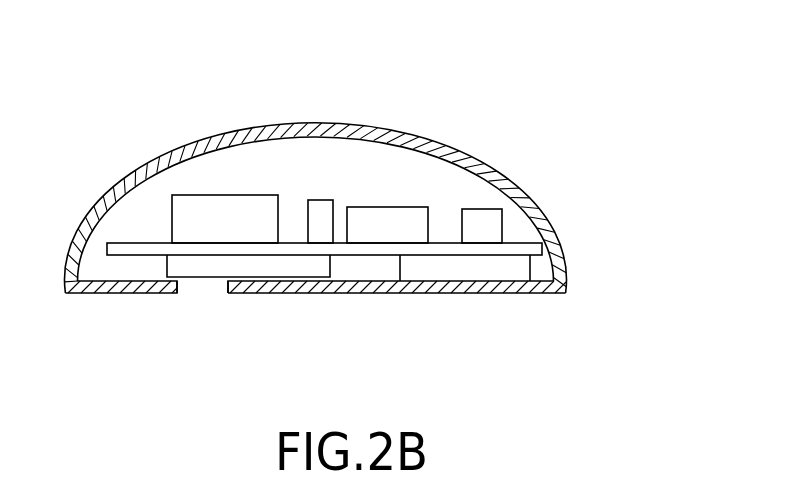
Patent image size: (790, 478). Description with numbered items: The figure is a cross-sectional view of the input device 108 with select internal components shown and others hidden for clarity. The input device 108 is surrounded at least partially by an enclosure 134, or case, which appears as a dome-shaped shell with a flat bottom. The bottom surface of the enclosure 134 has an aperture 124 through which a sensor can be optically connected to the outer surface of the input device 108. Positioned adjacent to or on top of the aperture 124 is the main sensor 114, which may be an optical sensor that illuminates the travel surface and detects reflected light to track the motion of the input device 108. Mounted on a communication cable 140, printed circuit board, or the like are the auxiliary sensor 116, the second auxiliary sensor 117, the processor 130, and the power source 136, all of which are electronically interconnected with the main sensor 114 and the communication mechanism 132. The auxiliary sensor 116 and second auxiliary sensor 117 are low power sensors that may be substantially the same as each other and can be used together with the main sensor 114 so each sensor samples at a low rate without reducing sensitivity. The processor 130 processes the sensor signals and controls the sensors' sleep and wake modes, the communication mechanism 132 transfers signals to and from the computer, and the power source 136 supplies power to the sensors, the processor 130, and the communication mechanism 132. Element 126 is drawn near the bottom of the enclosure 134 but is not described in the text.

The input device 108 is at (495, 158).
The enclosure 134 is at (338, 124).
The base 126 is at (365, 293).
The aperture 124 is at (196, 302).
The communication cable 140 is at (510, 248).
The auxiliary sensor 116 is at (222, 212).
The second auxiliary sensor 117 is at (315, 222).
The processor 130 is at (395, 217).
The power source 136 is at (490, 225).
The main sensor 114 is at (214, 279).
The communication mechanism 132 is at (470, 268).